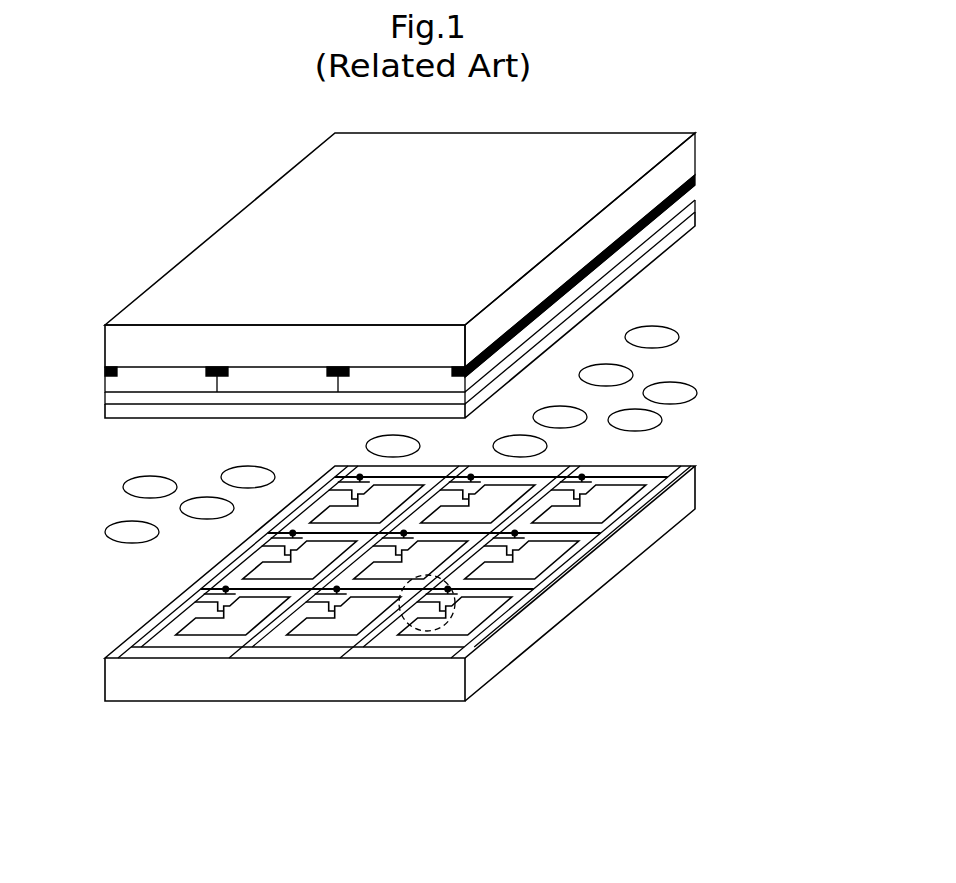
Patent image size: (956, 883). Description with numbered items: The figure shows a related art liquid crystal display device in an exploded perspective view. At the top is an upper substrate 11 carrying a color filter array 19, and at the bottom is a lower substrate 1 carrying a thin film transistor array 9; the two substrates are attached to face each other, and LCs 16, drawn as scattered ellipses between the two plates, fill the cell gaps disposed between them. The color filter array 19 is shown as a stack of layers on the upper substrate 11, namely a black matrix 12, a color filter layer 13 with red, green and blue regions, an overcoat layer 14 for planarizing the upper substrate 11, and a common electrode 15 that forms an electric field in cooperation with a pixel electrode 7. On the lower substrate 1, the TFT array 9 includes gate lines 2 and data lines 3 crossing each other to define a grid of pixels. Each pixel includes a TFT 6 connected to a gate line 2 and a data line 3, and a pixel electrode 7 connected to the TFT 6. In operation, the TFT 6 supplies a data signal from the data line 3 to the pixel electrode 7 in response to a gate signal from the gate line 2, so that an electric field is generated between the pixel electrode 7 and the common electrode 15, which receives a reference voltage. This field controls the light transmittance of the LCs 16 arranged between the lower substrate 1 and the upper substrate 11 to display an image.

The lower substrate 1 is at (682, 503).
The gate line 2 is at (572, 538).
The data line 3 is at (375, 632).
The TFT 6 is at (442, 626).
The pixel electrode 7 is at (423, 632).
The thin film transistor array 9 is at (473, 591).
The upper substrate 11 is at (688, 160).
The black matrix 12 is at (695, 180).
The color filter layer 13 is at (695, 194).
The overcoat layer 14 is at (695, 208).
The common electrode 15 is at (695, 222).
The LCs 16 is at (670, 337).
The color filter array 19 is at (476, 249).